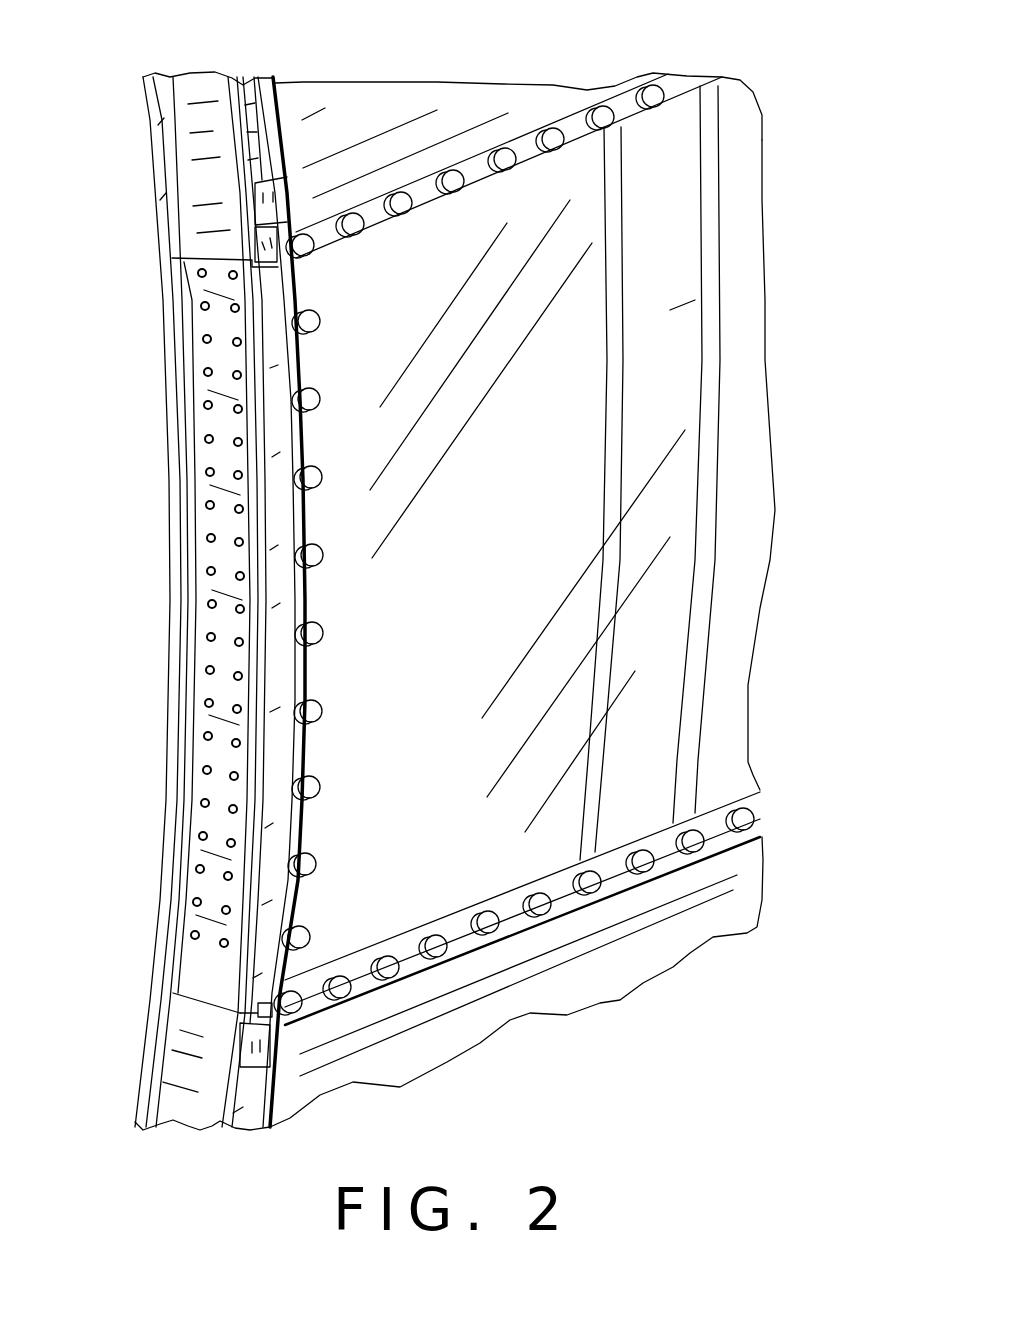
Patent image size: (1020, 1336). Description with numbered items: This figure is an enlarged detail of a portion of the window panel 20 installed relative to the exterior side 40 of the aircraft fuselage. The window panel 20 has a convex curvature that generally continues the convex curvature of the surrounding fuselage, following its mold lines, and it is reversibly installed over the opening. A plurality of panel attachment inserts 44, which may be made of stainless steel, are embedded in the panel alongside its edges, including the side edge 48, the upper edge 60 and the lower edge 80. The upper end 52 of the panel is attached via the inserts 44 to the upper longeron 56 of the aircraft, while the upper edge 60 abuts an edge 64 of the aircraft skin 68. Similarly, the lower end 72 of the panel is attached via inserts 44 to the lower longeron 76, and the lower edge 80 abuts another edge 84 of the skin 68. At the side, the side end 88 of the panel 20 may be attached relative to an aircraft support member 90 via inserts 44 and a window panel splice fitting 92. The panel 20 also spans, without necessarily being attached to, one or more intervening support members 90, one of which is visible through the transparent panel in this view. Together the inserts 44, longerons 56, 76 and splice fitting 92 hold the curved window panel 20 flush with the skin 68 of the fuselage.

The window panel 20 is at (490, 564).
The exterior side of the fuselage 40 is at (672, 925).
The panel attachment inserts 44 is at (433, 940).
The side edge 48 is at (297, 695).
The upper end of the panel 52 is at (380, 290).
The upper longeron 56 is at (262, 206).
The upper edge 60 is at (518, 150).
The edge of the skin 64 is at (466, 150).
The skin 68 is at (378, 125).
The lower end of the panel 72 is at (348, 898).
The lower longeron 76 is at (173, 994).
The lower edge 80 is at (258, 1070).
The edge of the skin 84 is at (413, 987).
The side end of the panel 88 is at (370, 610).
The aircraft support member 90 is at (200, 133).
The window panel splice fitting 92 is at (193, 513).